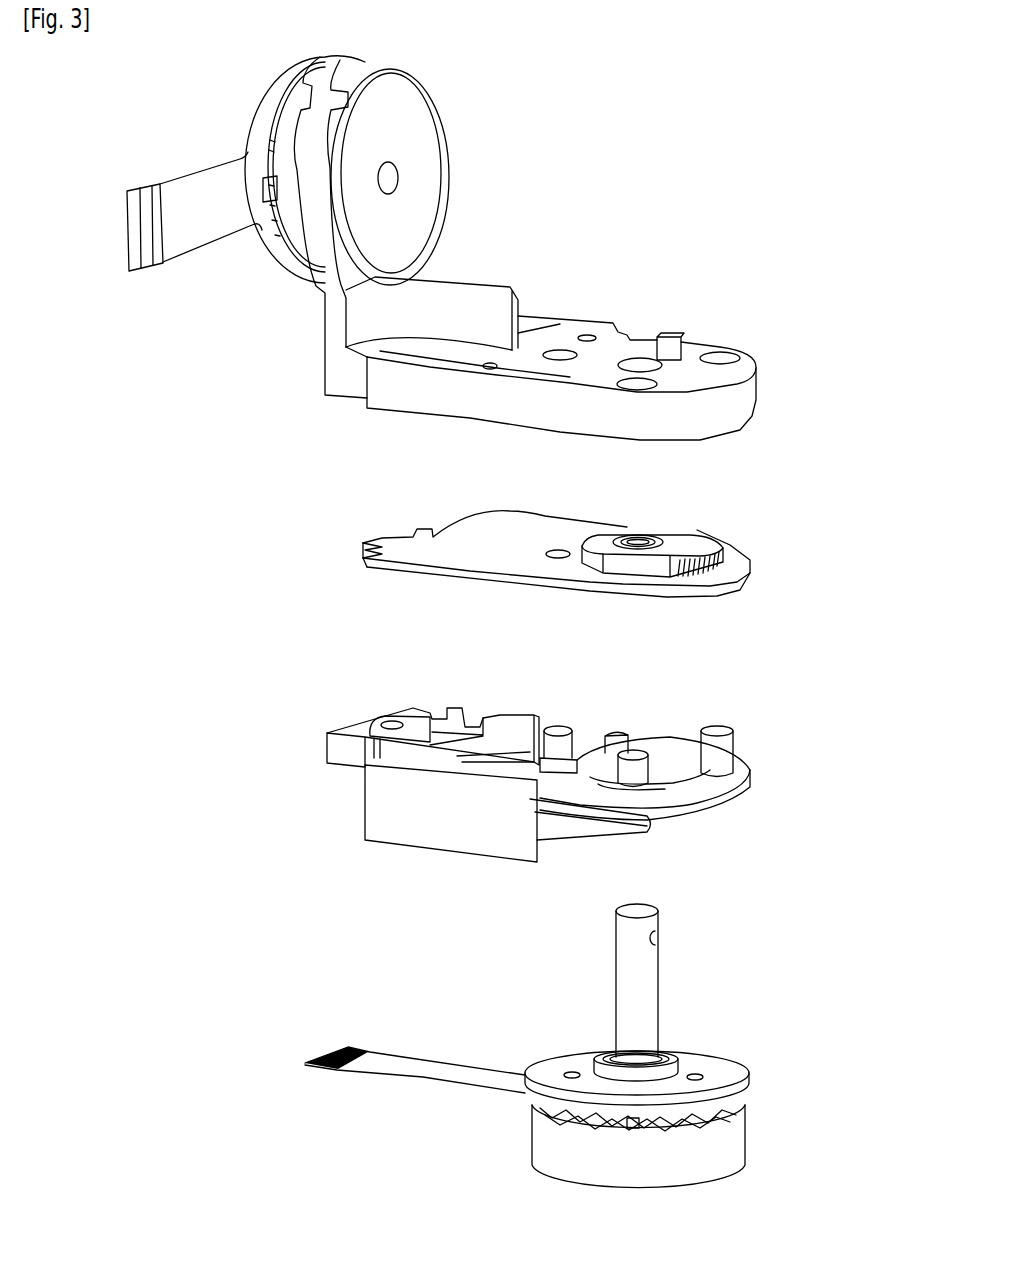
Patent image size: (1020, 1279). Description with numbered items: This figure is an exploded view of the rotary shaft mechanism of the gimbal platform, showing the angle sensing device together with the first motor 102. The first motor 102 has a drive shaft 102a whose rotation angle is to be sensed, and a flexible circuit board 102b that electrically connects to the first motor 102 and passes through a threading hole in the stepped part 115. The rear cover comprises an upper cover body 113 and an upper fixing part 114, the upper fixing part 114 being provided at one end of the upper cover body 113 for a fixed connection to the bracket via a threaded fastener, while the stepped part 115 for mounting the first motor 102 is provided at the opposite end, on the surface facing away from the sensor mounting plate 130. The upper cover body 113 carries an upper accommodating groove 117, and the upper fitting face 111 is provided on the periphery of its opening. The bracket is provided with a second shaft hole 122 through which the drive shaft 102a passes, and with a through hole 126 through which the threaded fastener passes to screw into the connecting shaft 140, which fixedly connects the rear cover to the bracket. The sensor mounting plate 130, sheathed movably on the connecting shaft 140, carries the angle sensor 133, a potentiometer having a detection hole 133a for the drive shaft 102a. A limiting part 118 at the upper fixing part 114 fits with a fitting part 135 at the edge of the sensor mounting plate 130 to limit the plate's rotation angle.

The first motor 102 is at (735, 1064).
The drive shaft 102a is at (647, 1000).
The flexible circuit board 102b is at (403, 1058).
The upper fitting face 111 is at (673, 745).
The upper cover body 113 is at (440, 810).
The upper fixing part 114 is at (353, 732).
The stepped part 115 is at (623, 818).
The upper accommodating groove 117 is at (500, 733).
The limiting part 118 is at (440, 715).
The second shaft hole 122 is at (632, 365).
The through hole 126 is at (718, 356).
The sensor mounting plate 130 is at (489, 543).
The angle sensor 133 is at (697, 533).
The detection hole 133a is at (638, 540).
The fitting part 135 is at (380, 545).
The connecting shaft 140 is at (557, 740).